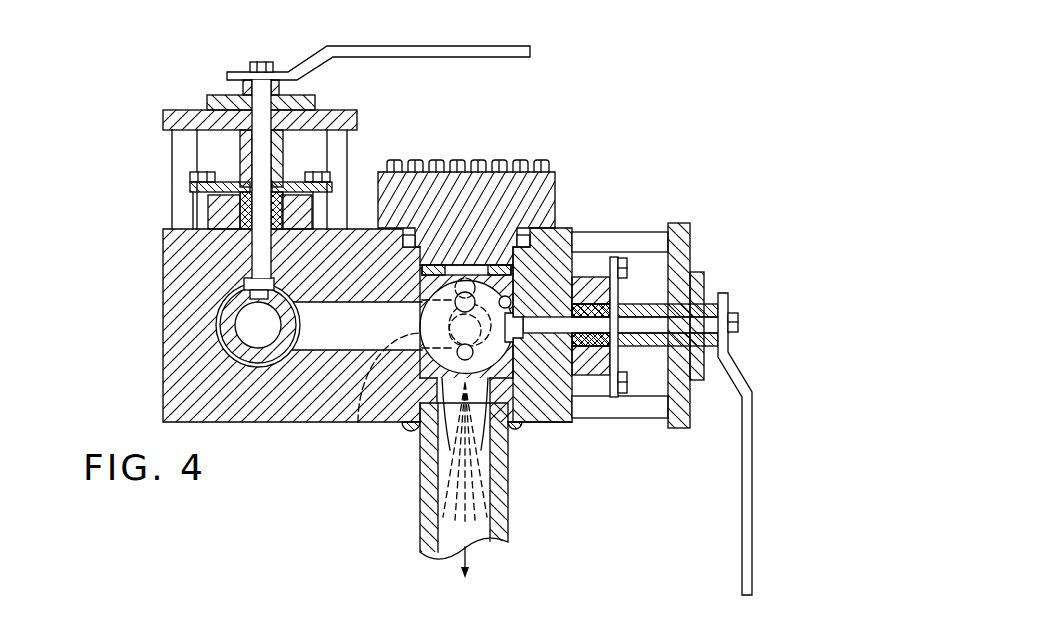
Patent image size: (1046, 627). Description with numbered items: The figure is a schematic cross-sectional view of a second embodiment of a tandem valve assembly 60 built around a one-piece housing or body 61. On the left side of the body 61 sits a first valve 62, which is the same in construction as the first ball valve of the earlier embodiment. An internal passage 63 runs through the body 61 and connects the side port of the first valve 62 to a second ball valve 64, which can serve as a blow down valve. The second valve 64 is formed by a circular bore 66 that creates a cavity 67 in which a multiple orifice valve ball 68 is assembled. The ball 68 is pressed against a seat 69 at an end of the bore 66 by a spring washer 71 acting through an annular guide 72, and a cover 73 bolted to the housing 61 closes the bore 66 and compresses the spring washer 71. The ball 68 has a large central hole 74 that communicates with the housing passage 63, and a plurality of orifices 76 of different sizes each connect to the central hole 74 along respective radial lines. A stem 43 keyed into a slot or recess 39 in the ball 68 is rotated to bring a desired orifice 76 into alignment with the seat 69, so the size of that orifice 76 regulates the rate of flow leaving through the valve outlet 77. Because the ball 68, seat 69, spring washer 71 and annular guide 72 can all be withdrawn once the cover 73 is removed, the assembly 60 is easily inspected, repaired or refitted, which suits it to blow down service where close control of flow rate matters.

The tandem valve assembly 60 is at (128, 389).
The housing 61 is at (264, 400).
The first valve 62 is at (206, 327).
The internal passage 63 is at (343, 338).
The second ball valve 64 is at (521, 391).
The circular bore 66 is at (510, 252).
The cavity 67 is at (573, 278).
The multiple orifice valve ball 68 is at (440, 345).
The seat 69 is at (420, 470).
The spring washer 71 is at (465, 292).
The annular guide 72 is at (421, 287).
The cover 73 is at (490, 188).
The central hole 74 is at (382, 399).
The orifices 76 is at (468, 296).
The valve outlet 77 is at (473, 358).
The slot 39 is at (509, 325).
The stem 43 is at (647, 318).